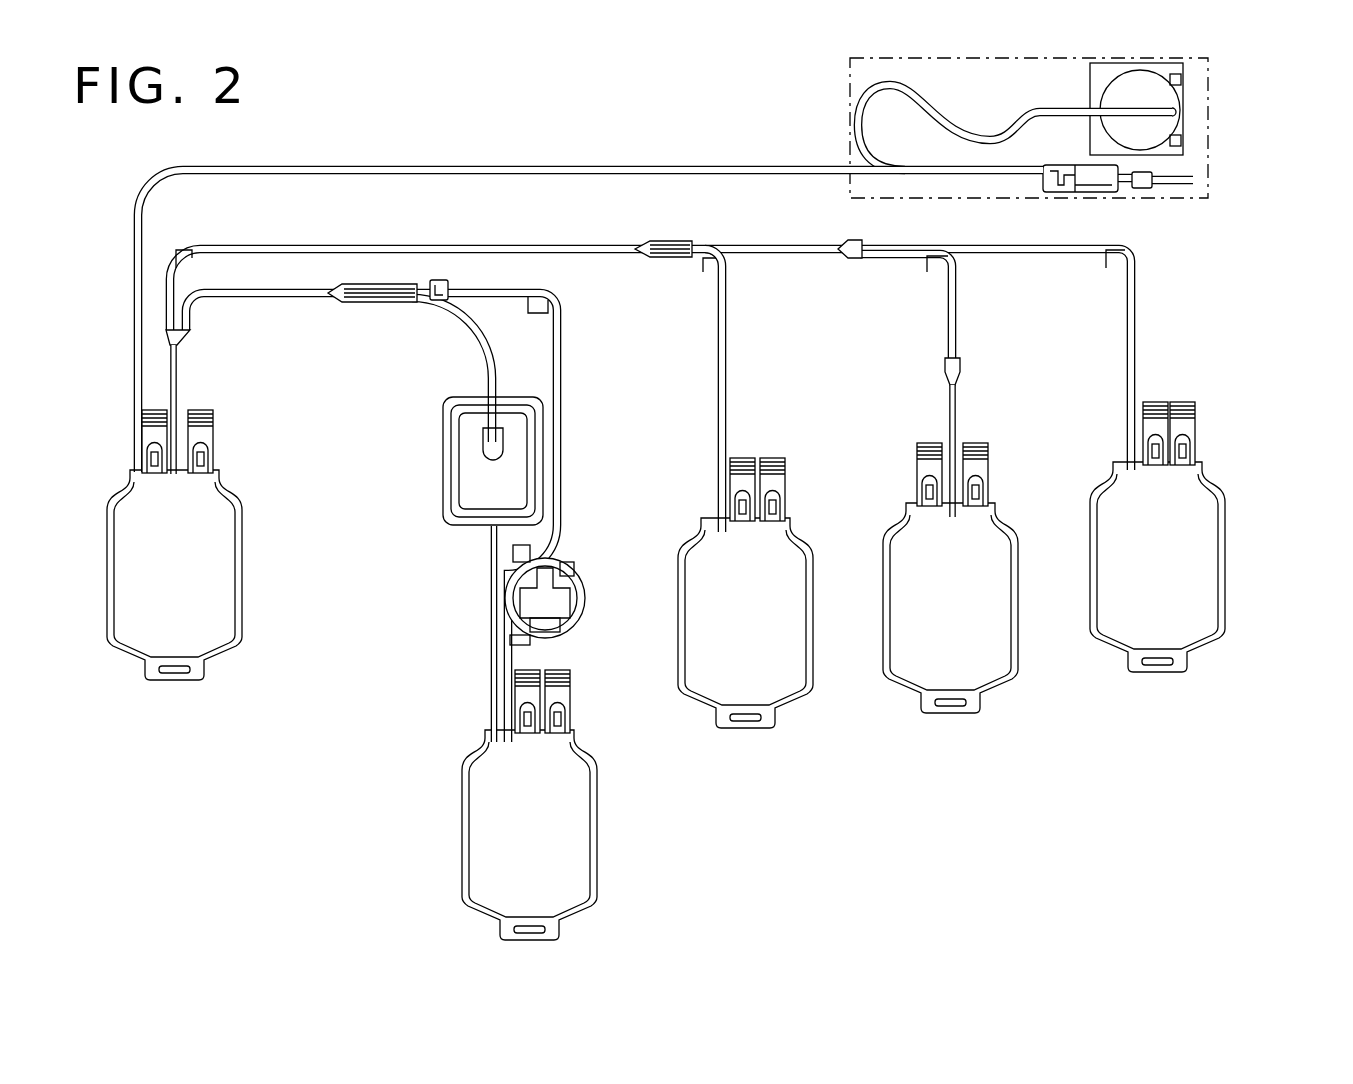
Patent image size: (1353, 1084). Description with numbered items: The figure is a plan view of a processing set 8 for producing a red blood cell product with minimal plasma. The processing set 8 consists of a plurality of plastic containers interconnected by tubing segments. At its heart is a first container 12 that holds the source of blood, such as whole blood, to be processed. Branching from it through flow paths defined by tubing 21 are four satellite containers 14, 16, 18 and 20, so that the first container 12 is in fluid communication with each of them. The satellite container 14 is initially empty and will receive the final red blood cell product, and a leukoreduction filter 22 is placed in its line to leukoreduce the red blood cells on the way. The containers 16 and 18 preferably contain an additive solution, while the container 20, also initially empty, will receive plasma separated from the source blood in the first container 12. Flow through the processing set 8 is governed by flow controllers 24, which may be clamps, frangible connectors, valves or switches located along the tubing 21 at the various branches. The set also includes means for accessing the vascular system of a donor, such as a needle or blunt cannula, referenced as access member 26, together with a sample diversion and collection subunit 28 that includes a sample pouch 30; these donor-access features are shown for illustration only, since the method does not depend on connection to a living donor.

The processing set 8 is at (1232, 258).
The first container 12 is at (212, 608).
The satellite container 14 is at (496, 830).
The satellite container 16 is at (718, 682).
The satellite container 18 is at (928, 668).
The satellite container 20 is at (1138, 628).
The tubing 21 is at (572, 248).
The leukoreduction filter 22 is at (468, 497).
The flow controllers 24 is at (558, 290).
The access member 26 is at (1205, 170).
The sample diversion and collection subunit 28 is at (930, 75).
The sample pouch 30 is at (1145, 105).